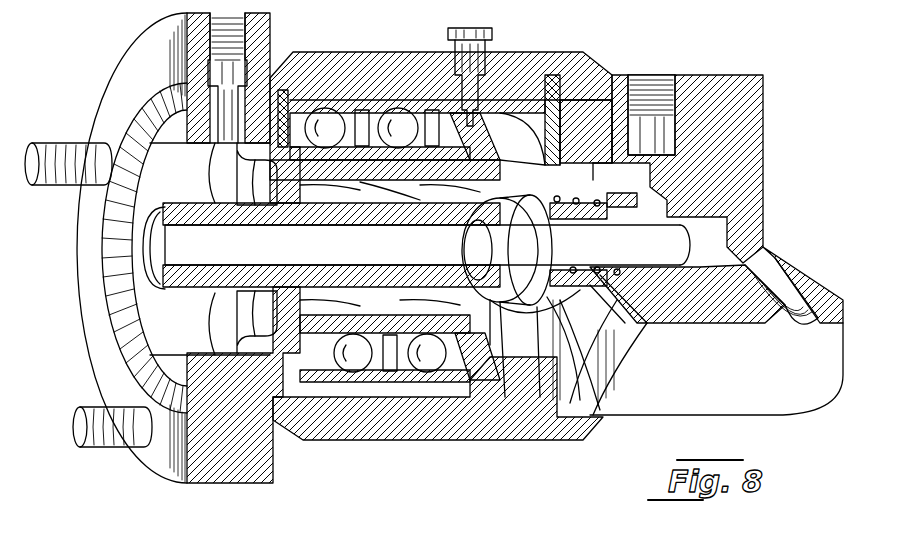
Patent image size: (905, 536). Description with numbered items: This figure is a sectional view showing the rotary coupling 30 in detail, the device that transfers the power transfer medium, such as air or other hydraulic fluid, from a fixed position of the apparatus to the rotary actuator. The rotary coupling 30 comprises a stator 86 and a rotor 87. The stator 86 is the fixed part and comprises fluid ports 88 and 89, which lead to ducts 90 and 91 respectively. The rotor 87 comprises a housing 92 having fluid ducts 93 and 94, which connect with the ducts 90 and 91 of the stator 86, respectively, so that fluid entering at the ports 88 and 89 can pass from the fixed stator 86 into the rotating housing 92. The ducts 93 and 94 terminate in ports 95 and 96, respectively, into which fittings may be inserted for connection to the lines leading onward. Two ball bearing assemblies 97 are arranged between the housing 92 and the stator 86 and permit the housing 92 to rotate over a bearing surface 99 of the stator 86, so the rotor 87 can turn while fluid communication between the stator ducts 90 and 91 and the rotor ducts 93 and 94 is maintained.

The rotary coupling 30 is at (143, 466).
The stator 86 is at (240, 468).
The rotor 87 is at (583, 450).
The fluid port 88 is at (137, 247).
The fluid port 89 is at (215, 28).
The duct 90 is at (343, 248).
The duct 91 is at (303, 188).
The housing 92 is at (368, 420).
The fluid duct 93 is at (660, 203).
The fluid duct 94 is at (535, 140).
The port 95 is at (790, 300).
The port 96 is at (647, 78).
The ball bearing assembly 97 is at (382, 108).
The bearing surface 99 is at (378, 187).